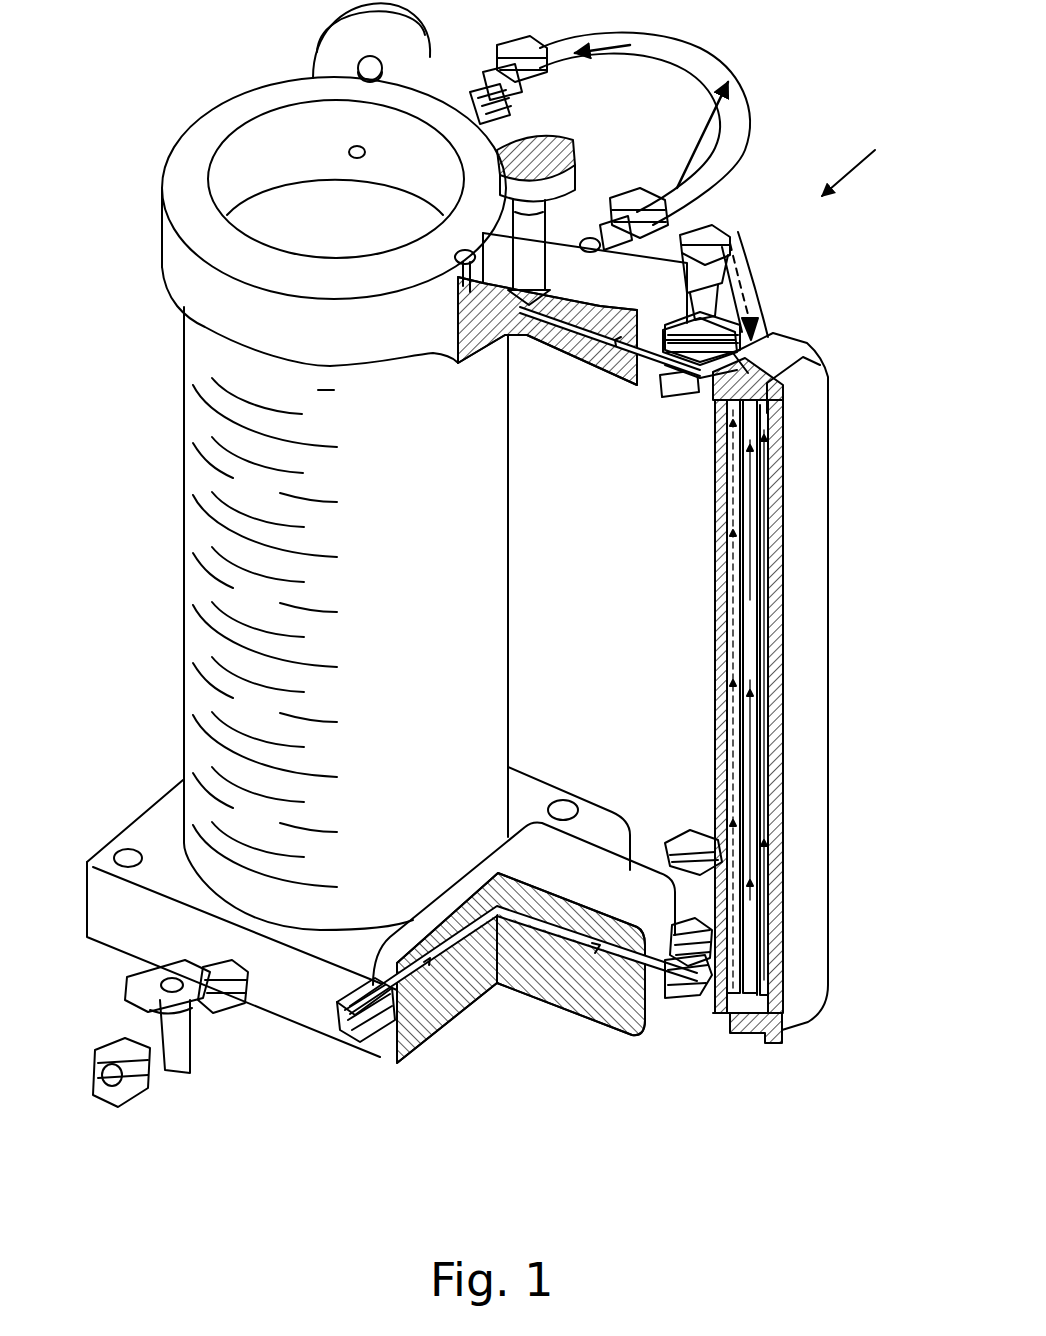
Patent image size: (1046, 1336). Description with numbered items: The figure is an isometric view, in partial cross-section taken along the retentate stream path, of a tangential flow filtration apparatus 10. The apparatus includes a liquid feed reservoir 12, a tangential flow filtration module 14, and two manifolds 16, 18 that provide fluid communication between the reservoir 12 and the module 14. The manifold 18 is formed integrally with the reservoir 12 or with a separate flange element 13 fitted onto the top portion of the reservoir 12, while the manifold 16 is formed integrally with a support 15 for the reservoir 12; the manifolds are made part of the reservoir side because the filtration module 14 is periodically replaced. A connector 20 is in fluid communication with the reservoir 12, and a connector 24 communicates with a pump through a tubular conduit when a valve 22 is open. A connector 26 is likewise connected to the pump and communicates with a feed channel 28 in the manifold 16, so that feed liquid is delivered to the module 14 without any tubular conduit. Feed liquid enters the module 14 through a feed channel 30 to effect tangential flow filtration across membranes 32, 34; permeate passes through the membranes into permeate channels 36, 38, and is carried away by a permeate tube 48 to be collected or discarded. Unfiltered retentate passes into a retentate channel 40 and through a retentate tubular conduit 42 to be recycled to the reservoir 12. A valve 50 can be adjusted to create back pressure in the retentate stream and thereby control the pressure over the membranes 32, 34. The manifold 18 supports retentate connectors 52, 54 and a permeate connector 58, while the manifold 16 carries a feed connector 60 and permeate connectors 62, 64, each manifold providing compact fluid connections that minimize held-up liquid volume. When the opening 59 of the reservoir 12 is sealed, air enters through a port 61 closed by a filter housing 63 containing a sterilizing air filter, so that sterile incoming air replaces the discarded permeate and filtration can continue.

The tangential flow filtration apparatus 10 is at (869, 154).
The liquid feed reservoir 12 is at (498, 601).
The flange element 13 is at (287, 267).
The tangential flow filtration module 14 is at (818, 718).
The support 15 is at (535, 790).
The manifold 16 is at (587, 868).
The manifold 18 is at (618, 368).
The connector 20 is at (238, 1018).
The valve 22 is at (128, 1003).
The connector 24 is at (150, 1083).
The connector 26 is at (365, 1050).
The feed channel 28 is at (600, 990).
The feed channel 30 is at (765, 818).
The membrane 32 is at (760, 458).
The membrane 34 is at (738, 508).
The permeate channel 36 is at (765, 543).
The permeate channel 38 is at (730, 716).
The retentate channel 40 is at (568, 348).
The retentate tubular conduit 42 is at (755, 96).
The permeate tube 48 is at (755, 292).
The valve 50 is at (540, 150).
The retentate connector 52 is at (636, 197).
The retentate connector 54 is at (690, 396).
The permeate connector 58 is at (710, 245).
The opening 59 is at (287, 207).
The feed connector 60 is at (700, 1000).
The port 61 is at (362, 158).
The permeate connector 62 is at (690, 935).
The filter housing 63 is at (420, 66).
The permeate connector 64 is at (690, 858).